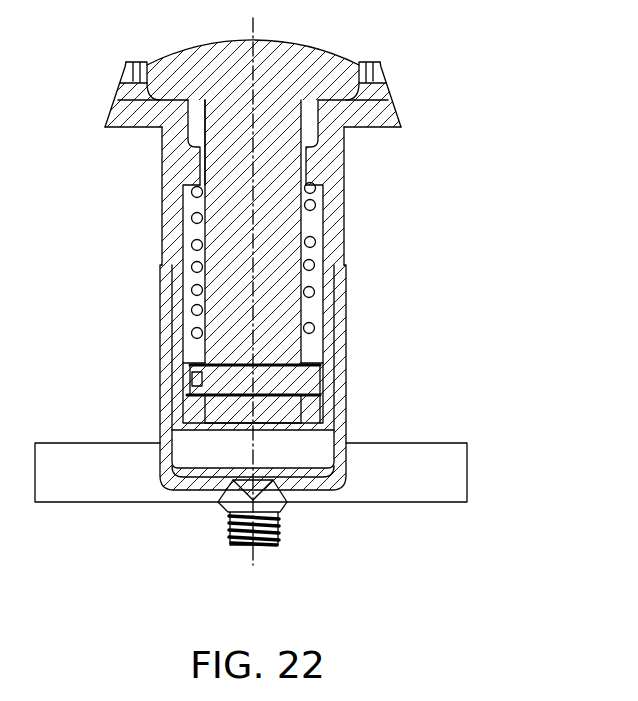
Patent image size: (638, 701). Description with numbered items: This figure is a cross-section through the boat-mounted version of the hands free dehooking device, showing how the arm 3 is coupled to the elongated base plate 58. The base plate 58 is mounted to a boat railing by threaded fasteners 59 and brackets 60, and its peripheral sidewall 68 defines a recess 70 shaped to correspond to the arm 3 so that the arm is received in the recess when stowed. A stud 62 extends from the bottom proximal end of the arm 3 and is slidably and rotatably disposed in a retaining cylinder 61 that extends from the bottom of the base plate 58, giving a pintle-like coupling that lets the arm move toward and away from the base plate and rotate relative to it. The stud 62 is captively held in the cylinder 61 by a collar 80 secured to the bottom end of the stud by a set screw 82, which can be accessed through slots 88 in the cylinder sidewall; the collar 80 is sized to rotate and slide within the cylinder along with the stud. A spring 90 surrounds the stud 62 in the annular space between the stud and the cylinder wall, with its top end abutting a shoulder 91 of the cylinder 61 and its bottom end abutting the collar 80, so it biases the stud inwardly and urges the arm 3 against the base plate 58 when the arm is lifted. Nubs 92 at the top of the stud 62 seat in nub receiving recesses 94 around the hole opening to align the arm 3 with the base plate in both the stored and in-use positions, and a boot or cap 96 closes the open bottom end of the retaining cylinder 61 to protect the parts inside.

The arm 3 is at (303, 43).
The recess 70 is at (153, 66).
The peripheral sidewall 68 is at (118, 84).
The base plate 58 is at (120, 118).
The nubs 92 is at (187, 150).
The nub receiving recesses 94 is at (316, 137).
The shoulder 91 is at (183, 190).
The spring 90 is at (314, 201).
The stud 62 is at (187, 242).
The retaining cylinder 61 is at (346, 243).
The boot or cap 96 is at (346, 385).
The slots 88 is at (182, 385).
The collar 80 is at (193, 408).
The set screw 82 is at (300, 386).
The brackets 60 is at (443, 472).
The threaded fasteners 59 is at (227, 532).